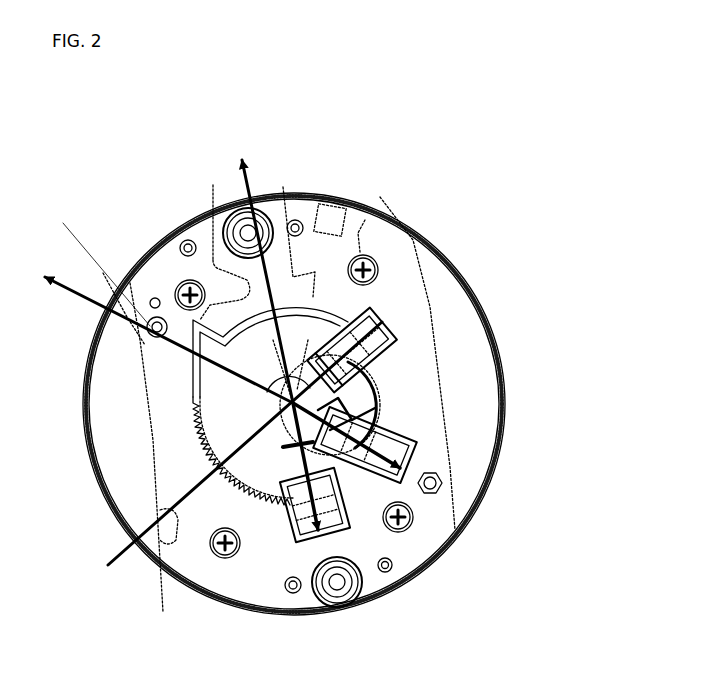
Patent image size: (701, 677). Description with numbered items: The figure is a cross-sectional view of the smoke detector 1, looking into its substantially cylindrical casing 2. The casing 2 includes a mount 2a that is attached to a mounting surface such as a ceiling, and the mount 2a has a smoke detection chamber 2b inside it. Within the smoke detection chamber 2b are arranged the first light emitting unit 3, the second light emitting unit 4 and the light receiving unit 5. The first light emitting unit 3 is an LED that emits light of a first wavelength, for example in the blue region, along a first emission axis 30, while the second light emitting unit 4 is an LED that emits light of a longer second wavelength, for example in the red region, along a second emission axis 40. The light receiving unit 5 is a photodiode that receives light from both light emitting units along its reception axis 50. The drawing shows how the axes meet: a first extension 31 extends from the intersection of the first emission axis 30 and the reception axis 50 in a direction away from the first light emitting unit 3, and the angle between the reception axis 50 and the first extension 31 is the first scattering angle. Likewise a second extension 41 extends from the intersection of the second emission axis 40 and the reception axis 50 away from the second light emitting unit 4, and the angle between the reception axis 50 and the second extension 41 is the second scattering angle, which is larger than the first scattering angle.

The smoke detector 1 is at (302, 388).
The casing 2 is at (328, 401).
The mount 2a is at (496, 333).
The smoke detection chamber 2b is at (382, 392).
The first light emitting unit 3 is at (415, 514).
The second light emitting unit 4 is at (422, 452).
The light receiving unit 5 is at (365, 220).
The first emission axis 30 is at (444, 487).
The first extension 31 is at (213, 185).
The second emission axis 40 is at (382, 418).
The second extension 41 is at (193, 352).
The reception axis 50 is at (154, 462).